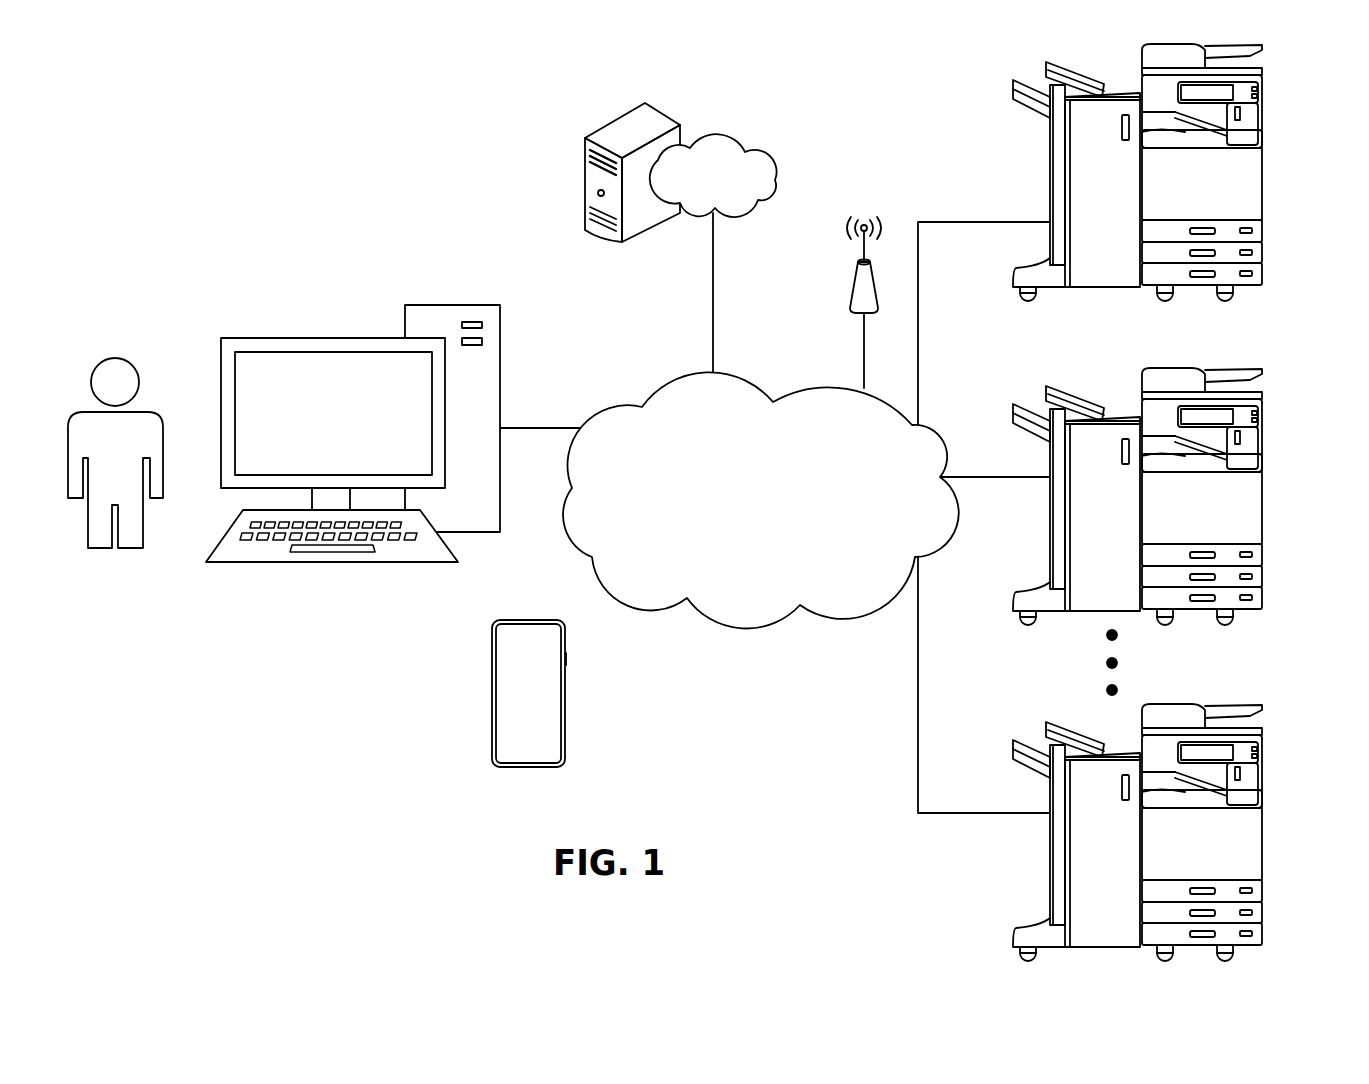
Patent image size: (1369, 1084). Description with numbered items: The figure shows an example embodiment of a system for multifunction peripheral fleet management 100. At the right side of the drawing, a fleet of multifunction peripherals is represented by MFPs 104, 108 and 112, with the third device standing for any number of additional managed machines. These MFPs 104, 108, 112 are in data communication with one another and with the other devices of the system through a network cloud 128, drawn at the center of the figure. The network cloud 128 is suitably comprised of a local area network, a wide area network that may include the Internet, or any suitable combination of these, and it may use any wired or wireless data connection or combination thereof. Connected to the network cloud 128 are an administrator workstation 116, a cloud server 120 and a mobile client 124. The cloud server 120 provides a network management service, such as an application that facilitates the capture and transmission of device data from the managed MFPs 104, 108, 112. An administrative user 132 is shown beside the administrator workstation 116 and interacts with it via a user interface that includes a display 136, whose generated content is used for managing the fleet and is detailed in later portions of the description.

The system for MFP fleet management 100 is at (234, 134).
The MFP 104 is at (1262, 189).
The MFP 108 is at (1262, 527).
The MFP 112 is at (1262, 847).
The administrator workstation 116 is at (324, 338).
The cloud server 120 is at (675, 122).
The mobile client 124 is at (532, 723).
The network cloud 128 is at (842, 613).
The administrative user 132 is at (162, 446).
The display 136 is at (295, 433).